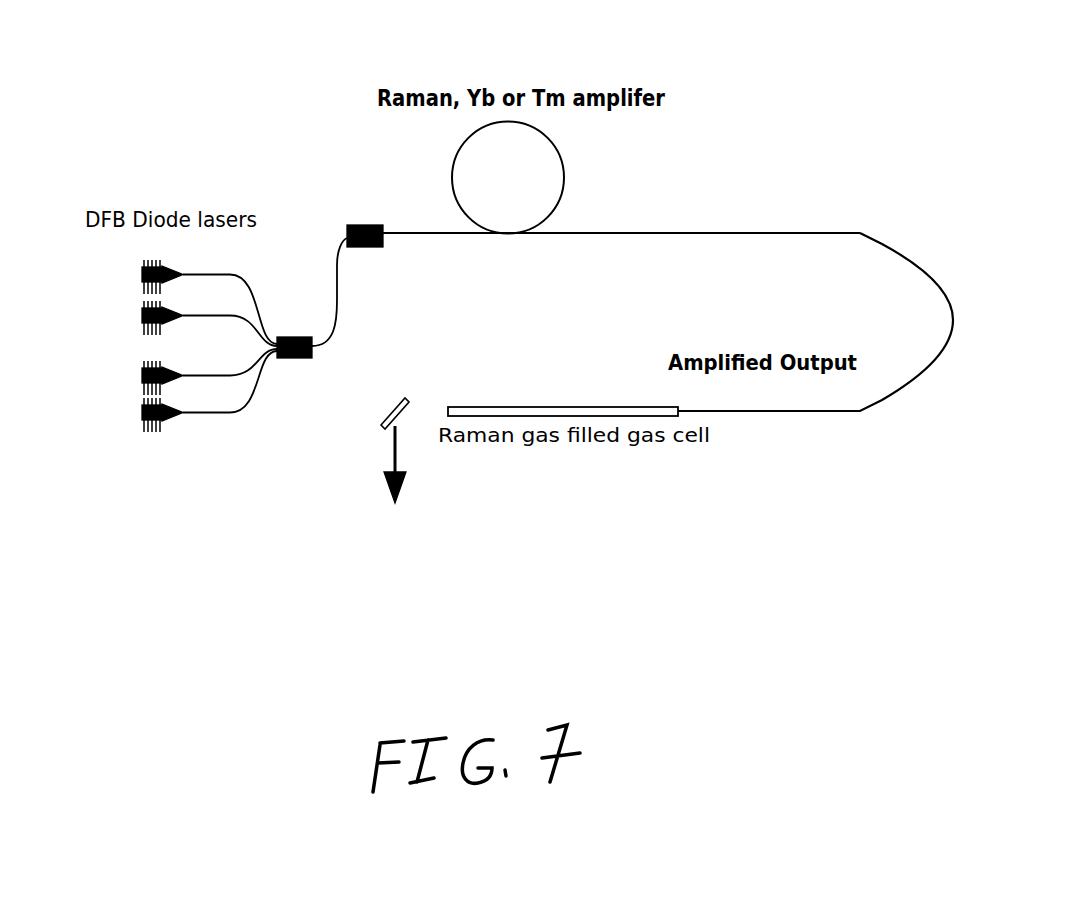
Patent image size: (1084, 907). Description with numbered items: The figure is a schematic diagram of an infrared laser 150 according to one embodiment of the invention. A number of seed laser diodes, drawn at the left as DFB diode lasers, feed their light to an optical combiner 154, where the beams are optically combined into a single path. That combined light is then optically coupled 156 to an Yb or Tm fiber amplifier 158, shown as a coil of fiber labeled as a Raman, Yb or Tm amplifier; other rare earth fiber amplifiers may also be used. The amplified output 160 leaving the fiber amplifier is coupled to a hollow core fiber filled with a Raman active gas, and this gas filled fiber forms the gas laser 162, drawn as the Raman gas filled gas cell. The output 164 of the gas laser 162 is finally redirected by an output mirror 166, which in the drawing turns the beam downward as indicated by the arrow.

The infrared laser 150 is at (667, 25).
The optical combiner 154 is at (300, 358).
The optical coupler 156 is at (353, 224).
The Yb or Tm fiber amplifier 158 is at (565, 177).
The amplified output 160 is at (883, 246).
The gas laser 162 is at (563, 403).
The output 164 is at (400, 472).
The output mirror 166 is at (396, 397).